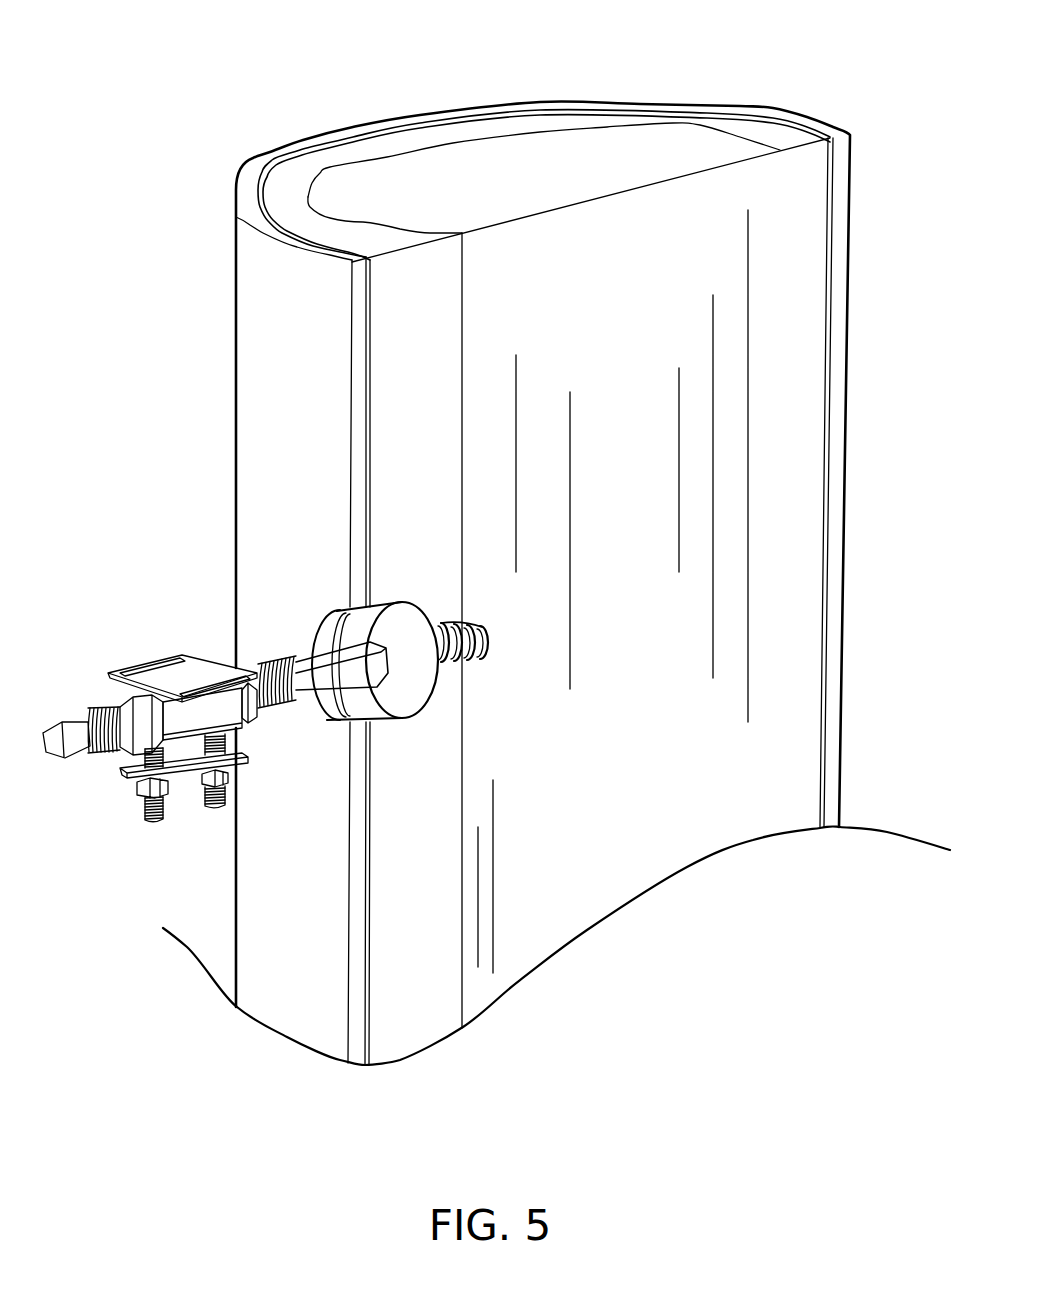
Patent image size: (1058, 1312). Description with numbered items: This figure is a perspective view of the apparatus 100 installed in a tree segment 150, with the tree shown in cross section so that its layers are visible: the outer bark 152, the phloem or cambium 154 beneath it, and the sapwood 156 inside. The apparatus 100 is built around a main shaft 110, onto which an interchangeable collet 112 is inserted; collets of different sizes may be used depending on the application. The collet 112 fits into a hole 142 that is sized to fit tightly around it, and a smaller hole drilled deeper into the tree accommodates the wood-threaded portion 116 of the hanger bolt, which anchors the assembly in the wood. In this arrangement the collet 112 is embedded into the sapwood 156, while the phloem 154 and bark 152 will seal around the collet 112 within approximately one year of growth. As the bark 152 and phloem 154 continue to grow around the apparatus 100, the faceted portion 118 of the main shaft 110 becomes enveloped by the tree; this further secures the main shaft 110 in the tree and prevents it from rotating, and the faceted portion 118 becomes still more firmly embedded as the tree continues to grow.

The apparatus 100 is at (91, 641).
The main shaft 110 is at (278, 712).
The collet 112 is at (422, 687).
The wood-threaded portion 116 is at (474, 656).
The faceted portion 118 is at (322, 678).
The hole 142 is at (310, 632).
The tree segment 150 is at (886, 396).
The bark 152 is at (252, 228).
The phloem or cambium 154 is at (263, 175).
The sapwood 156 is at (333, 153).